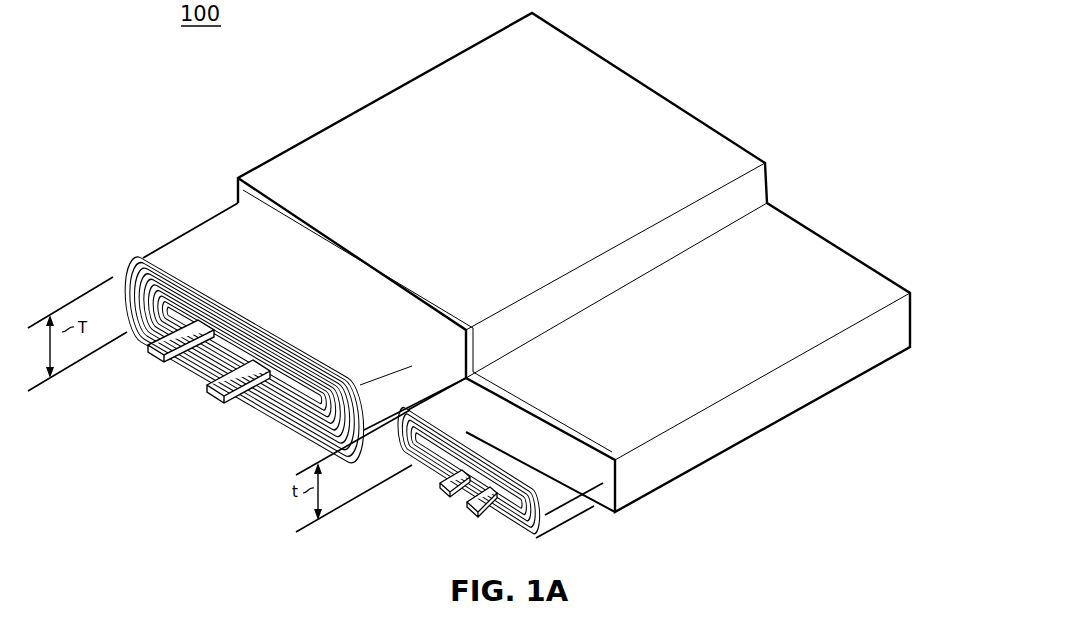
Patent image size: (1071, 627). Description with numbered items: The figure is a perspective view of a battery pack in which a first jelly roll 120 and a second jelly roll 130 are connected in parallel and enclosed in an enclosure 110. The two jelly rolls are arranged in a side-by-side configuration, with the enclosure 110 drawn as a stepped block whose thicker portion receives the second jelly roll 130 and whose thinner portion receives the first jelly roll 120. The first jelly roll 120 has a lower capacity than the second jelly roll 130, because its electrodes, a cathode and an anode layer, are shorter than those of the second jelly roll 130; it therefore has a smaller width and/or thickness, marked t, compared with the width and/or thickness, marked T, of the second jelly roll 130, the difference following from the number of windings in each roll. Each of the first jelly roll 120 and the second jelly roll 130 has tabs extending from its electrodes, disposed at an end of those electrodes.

The enclosure 110 is at (707, 128).
The first jelly roll 120 is at (428, 470).
The second jelly roll 130 is at (195, 368).